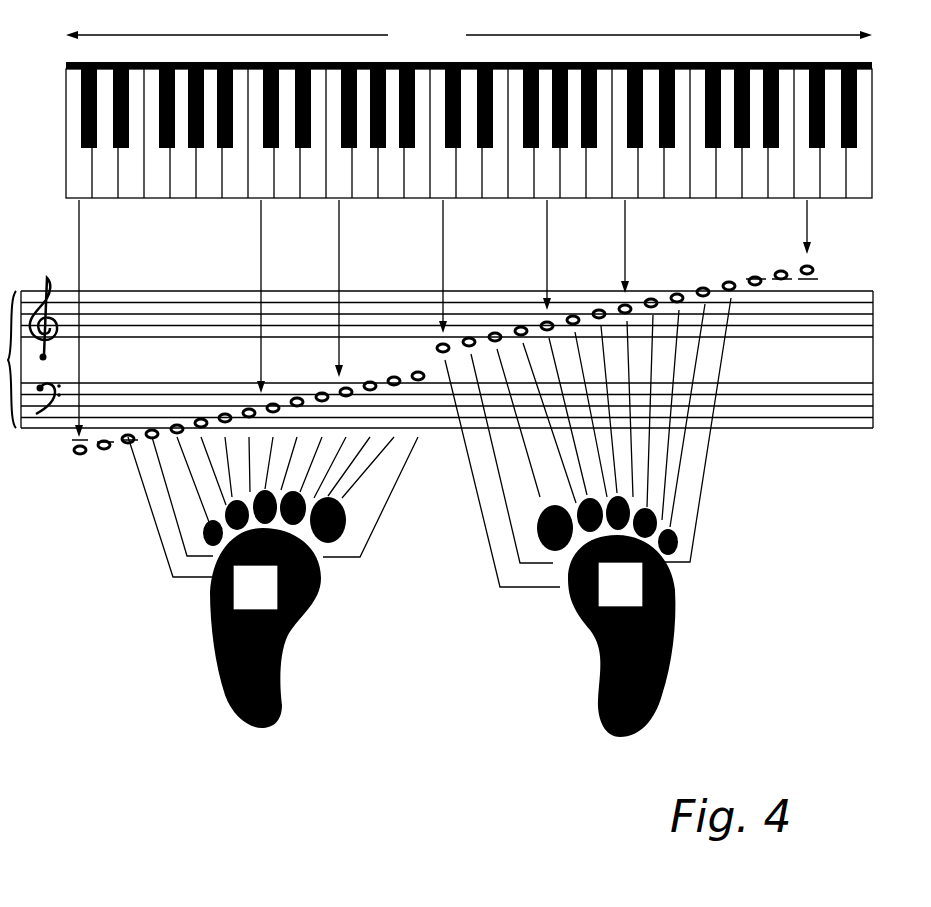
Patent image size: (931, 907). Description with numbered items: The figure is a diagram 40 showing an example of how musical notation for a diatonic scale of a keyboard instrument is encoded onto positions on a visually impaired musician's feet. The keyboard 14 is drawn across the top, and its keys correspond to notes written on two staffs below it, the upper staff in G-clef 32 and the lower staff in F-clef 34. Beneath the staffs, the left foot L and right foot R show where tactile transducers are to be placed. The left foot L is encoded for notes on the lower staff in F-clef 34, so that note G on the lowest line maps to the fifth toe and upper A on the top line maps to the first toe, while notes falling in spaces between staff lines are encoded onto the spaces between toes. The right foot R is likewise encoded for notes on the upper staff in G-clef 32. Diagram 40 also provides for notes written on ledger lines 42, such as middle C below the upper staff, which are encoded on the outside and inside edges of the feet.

The keyboard 14 is at (65, 122).
The G-clef 32 is at (45, 280).
The F-clef 34 is at (45, 408).
The diagram 40 is at (403, 697).
The ledger lines 42 is at (72, 465).